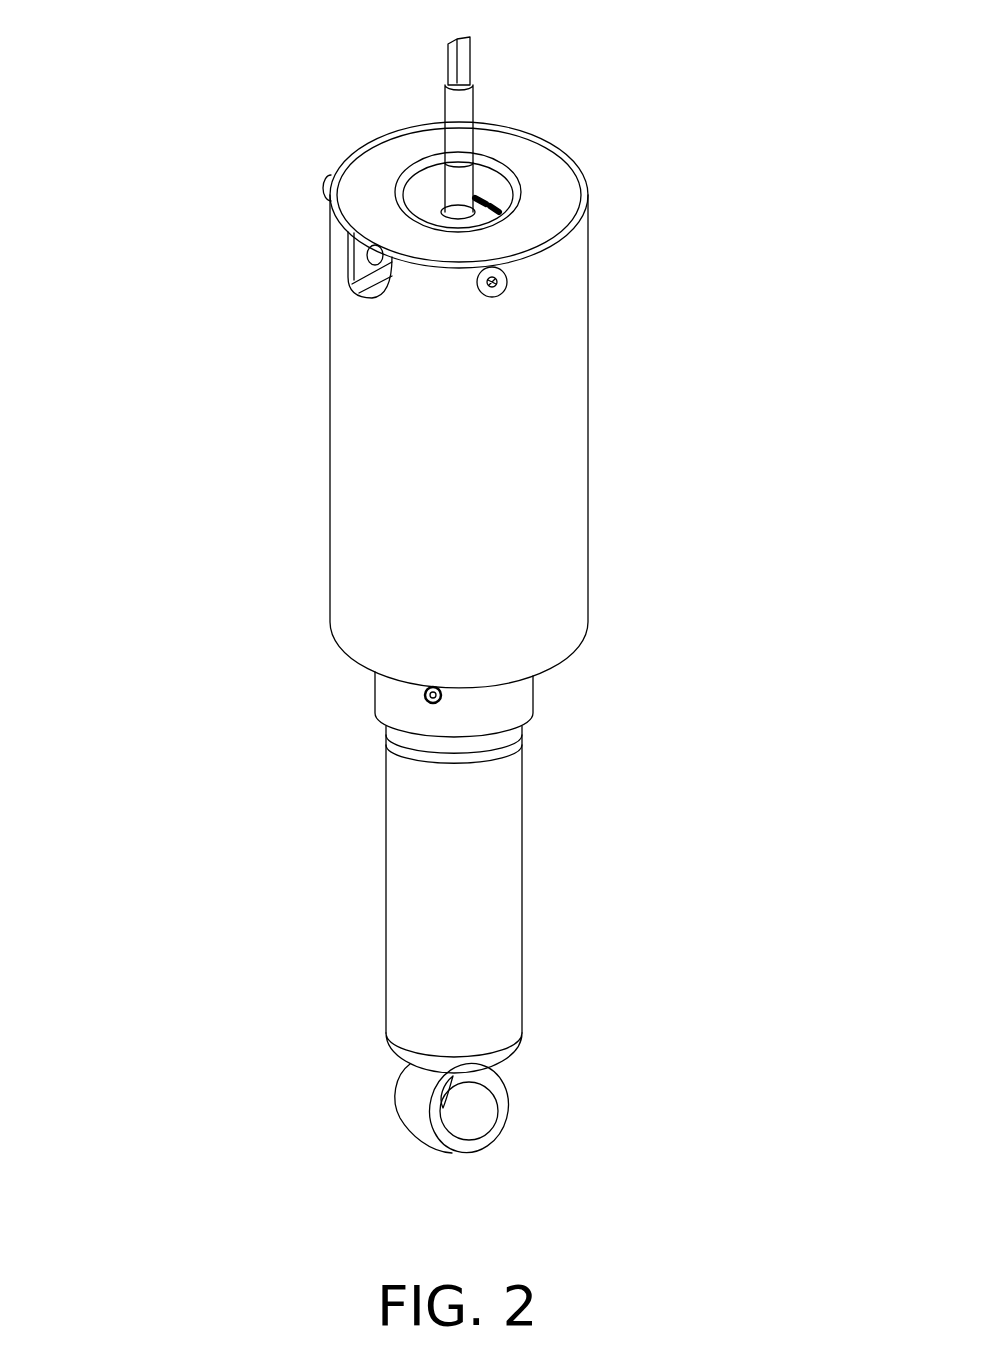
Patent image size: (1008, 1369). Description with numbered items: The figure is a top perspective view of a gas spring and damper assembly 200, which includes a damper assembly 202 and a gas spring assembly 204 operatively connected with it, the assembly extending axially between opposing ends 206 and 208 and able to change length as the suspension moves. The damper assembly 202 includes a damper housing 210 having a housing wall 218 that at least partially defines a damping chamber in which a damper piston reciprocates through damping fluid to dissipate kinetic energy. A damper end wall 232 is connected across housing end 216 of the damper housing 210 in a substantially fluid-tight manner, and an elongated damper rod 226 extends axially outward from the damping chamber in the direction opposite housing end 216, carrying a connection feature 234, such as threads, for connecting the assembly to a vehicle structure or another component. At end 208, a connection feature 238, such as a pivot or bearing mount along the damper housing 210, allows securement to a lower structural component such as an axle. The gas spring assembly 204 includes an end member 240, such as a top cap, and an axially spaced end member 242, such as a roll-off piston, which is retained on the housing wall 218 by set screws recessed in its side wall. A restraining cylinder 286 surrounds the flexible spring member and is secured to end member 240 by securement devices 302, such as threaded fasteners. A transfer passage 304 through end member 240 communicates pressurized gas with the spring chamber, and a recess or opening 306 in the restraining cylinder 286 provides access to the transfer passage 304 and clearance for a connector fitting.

The gas spring and damper assembly 200 is at (708, 100).
The damper assembly 202 is at (353, 925).
The gas spring assembly 204 is at (197, 285).
The end 206 is at (648, 204).
The end 208 is at (547, 1073).
The damper housing 210 is at (525, 910).
The housing end 216 is at (523, 1107).
The housing wall 218 is at (522, 810).
The elongated damper rod 226 is at (457, 178).
The damper end wall 232 is at (433, 1068).
The connection feature 234 is at (475, 97).
The connection feature 238 is at (415, 1127).
The end member 240 is at (390, 148).
The end member 242 is at (373, 683).
The restraining cylinder 286 is at (327, 497).
The securement devices 302 is at (326, 186).
The transfer passage 304 is at (352, 252).
The recess or opening 306 is at (363, 290).